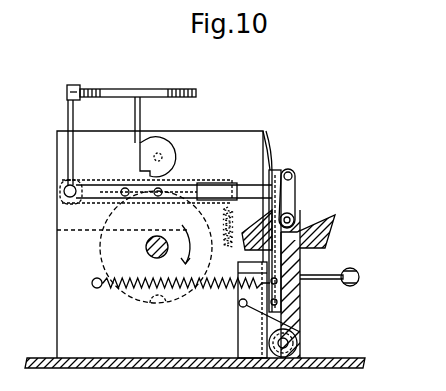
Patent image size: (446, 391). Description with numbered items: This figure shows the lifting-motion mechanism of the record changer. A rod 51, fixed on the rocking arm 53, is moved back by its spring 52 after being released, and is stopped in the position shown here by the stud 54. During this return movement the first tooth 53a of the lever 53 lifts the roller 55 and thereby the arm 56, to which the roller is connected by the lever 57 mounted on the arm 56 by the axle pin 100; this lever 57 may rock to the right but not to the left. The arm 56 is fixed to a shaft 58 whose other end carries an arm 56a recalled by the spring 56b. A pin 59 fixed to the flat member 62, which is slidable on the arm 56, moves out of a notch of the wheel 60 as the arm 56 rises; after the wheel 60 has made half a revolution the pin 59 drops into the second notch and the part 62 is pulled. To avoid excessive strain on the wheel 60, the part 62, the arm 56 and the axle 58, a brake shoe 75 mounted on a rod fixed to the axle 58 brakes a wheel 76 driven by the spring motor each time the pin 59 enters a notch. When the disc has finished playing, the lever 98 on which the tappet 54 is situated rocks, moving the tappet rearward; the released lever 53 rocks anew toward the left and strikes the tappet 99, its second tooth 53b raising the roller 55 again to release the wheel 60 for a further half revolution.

The brake shoe 75 is at (67, 95).
The wheel 76 is at (171, 89).
The pin 59 is at (159, 189).
The flat member 62 is at (195, 182).
The arm 56 is at (248, 194).
The arm 56a is at (225, 182).
The spring 56b is at (57, 230).
The shaft 58 is at (63, 192).
The wheel 60 is at (94, 252).
The spring 52 is at (148, 288).
The stud 54 is at (238, 276).
The rocking arm 53 is at (290, 297).
The first tooth 53a is at (275, 168).
The second tooth 53b is at (338, 231).
The rod 51 is at (272, 172).
The lever 57 is at (294, 200).
The axle pin 100 is at (292, 176).
The roller 55 is at (294, 220).
The lever 98 is at (330, 275).
The tappet 99 is at (300, 334).